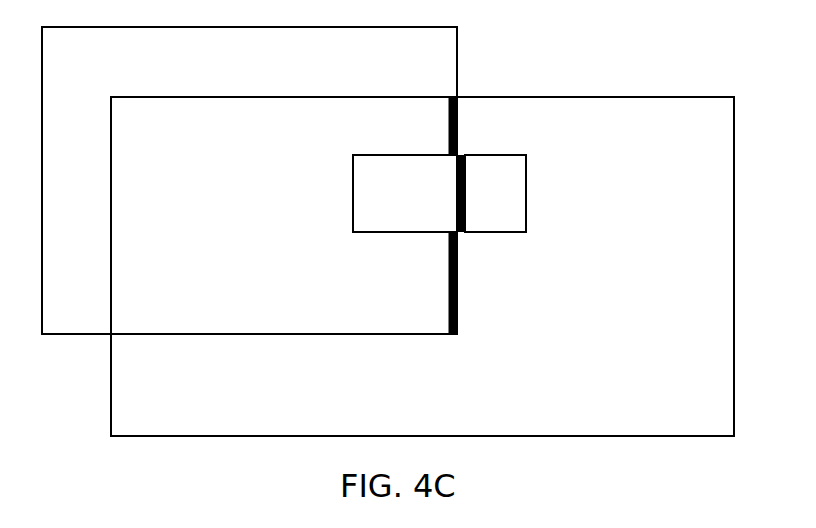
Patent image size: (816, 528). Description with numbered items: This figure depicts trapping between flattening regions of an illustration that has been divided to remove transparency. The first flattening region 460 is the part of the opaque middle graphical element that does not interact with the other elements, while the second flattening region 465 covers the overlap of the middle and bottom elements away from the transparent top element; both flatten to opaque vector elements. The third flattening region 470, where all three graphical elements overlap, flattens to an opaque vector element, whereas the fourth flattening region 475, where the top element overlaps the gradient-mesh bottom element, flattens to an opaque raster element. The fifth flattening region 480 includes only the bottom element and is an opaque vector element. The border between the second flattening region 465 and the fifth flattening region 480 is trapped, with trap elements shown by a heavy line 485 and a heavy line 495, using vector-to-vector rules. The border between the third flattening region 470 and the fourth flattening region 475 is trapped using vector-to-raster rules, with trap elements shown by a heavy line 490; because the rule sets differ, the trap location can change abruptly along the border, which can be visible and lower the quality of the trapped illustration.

The first flattening region 460 is at (249, 180).
The second flattening region 465 is at (200, 196).
The third flattening region 470 is at (405, 193).
The fourth flattening region 475 is at (495, 193).
The fifth flattening region 480 is at (422, 266).
The heavy line 485 is at (457, 127).
The heavy line 490 is at (465, 216).
The heavy line 495 is at (458, 283).